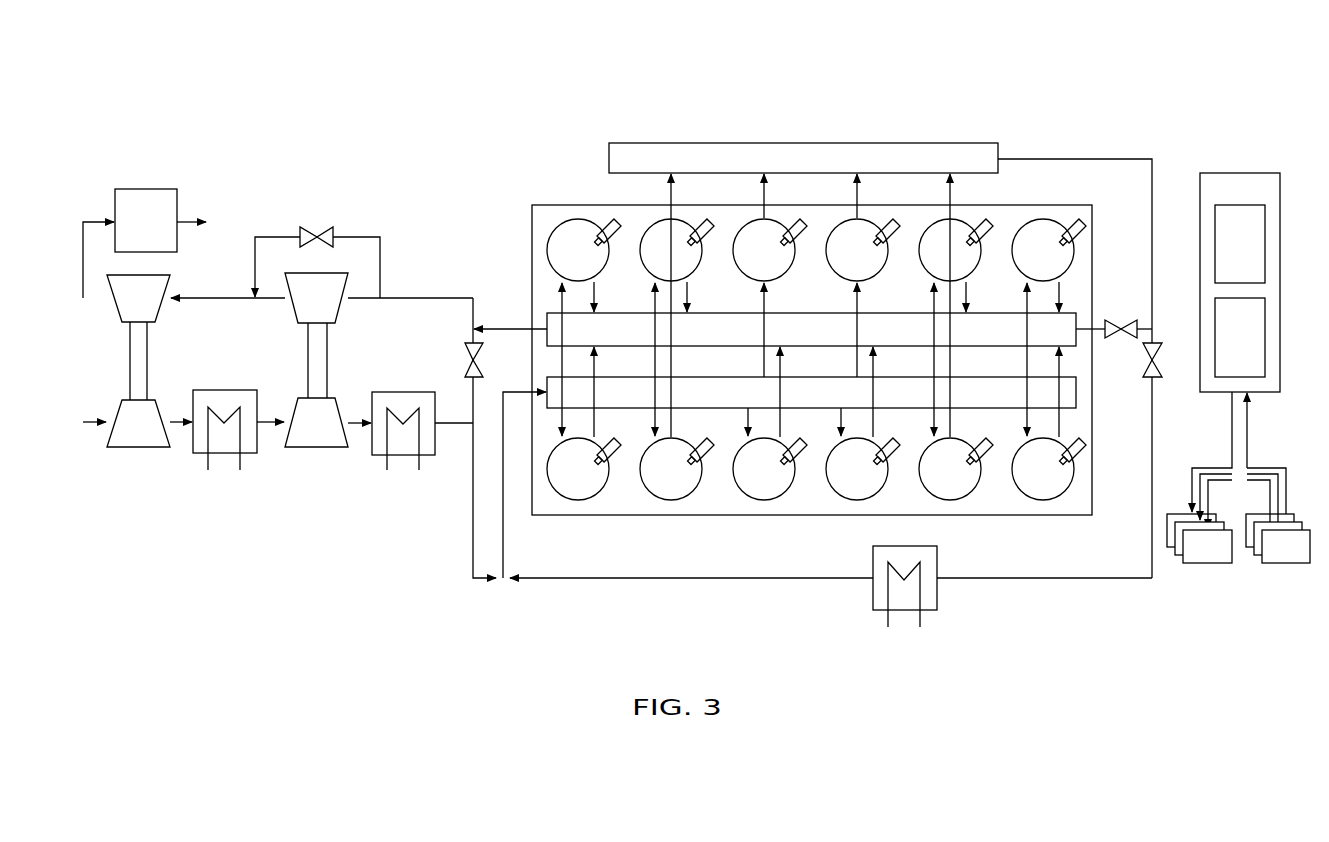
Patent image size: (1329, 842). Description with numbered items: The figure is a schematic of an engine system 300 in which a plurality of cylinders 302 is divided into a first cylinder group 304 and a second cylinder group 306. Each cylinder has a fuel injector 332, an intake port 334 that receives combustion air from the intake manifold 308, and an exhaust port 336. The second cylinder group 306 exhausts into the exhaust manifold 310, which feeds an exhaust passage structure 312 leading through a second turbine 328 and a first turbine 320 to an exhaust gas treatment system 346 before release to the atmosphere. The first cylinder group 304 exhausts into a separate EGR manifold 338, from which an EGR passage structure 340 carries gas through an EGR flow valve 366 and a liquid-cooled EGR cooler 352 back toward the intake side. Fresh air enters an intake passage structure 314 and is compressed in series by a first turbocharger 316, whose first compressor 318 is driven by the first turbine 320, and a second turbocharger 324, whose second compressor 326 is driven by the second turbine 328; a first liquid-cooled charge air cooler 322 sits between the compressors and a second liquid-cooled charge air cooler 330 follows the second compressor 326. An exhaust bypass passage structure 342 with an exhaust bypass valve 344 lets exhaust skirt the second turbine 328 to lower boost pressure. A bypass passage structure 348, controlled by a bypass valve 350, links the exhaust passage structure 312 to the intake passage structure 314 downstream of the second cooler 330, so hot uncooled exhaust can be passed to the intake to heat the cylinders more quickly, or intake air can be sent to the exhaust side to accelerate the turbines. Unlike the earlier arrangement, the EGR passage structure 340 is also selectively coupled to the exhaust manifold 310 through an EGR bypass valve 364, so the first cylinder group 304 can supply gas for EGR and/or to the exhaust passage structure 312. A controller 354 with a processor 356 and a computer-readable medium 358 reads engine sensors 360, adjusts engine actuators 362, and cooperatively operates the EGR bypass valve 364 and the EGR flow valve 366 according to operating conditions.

The engine system 300 is at (1195, 47).
The plurality of cylinders 302 is at (532, 173).
The first cylinder group 304 is at (786, 274).
The second cylinder group 306 is at (787, 491).
The intake manifold 308 is at (811, 392).
The exhaust manifold 310 is at (811, 329).
The exhaust passage structure 312 is at (192, 215).
The intake passage structure 314 is at (85, 424).
The first turbocharger 316 is at (105, 361).
The first compressor 318 is at (138, 423).
The first turbine 320 is at (138, 298).
The first liquid-cooled charge air cooler 322 is at (218, 390).
The second turbocharger 324 is at (287, 360).
The second compressor 326 is at (316, 422).
The second turbine 328 is at (316, 298).
The second liquid-cooled charge air cooler 330 is at (400, 392).
The fuel injector 332 is at (802, 222).
The intake port 334 is at (749, 428).
The exhaust port 336 is at (792, 438).
The EGR manifold 338 is at (803, 158).
The EGR passage structure 340 is at (1115, 159).
The exhaust bypass passage structure 342 is at (378, 237).
The exhaust bypass valve 344 is at (309, 228).
The exhaust gas treatment system 346 is at (146, 220).
The bypass passage structure 348 is at (476, 395).
The bypass valve 350 is at (481, 350).
The EGR cooler 352 is at (938, 556).
The controller 354 is at (1240, 282).
The processor 356 is at (1240, 244).
The computer-readable medium 358 is at (1240, 337).
The engine sensors 360 is at (1278, 478).
The engine actuators 362 is at (1199, 477).
The EGR bypass valve 364 is at (1108, 320).
The EGR flow valve 366 is at (1145, 368).